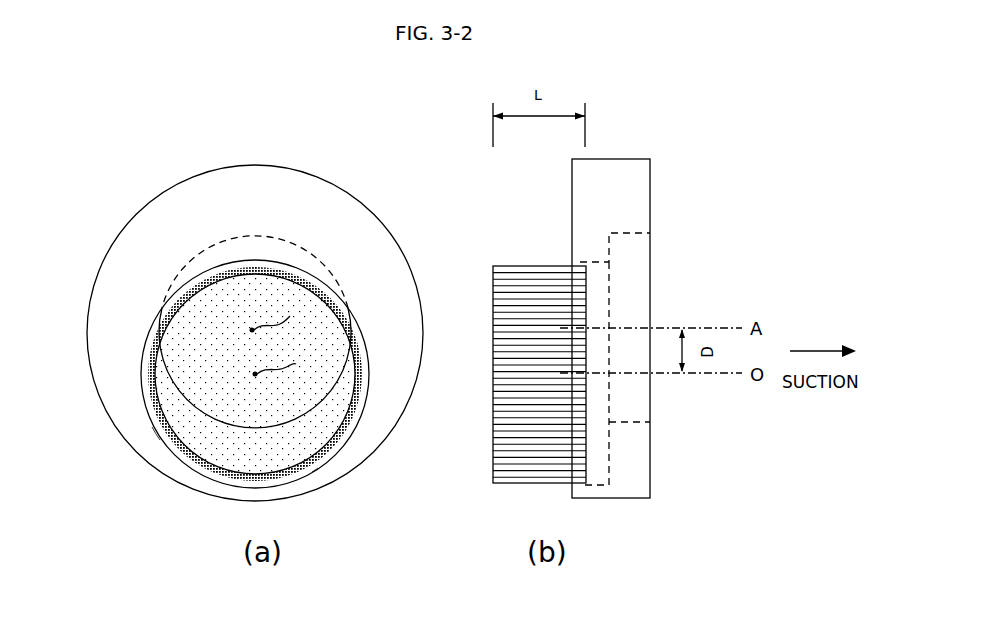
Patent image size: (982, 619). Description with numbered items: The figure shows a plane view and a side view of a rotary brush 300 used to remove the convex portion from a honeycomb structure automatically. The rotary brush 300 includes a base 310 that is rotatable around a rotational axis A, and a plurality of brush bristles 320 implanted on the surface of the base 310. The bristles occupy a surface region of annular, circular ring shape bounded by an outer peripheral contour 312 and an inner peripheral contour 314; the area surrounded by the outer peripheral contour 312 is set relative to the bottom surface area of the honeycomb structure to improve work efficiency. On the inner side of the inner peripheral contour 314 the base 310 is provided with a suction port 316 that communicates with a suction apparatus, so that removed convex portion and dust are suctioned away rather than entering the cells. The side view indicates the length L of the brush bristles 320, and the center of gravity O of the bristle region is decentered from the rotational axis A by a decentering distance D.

The rotary brush 300 is at (124, 176).
The base 310 is at (270, 166).
The outer peripheral contour 312 is at (152, 427).
The inner peripheral contour 314 is at (318, 468).
The suction port 316 is at (185, 372).
The brush bristles 320 is at (198, 477).